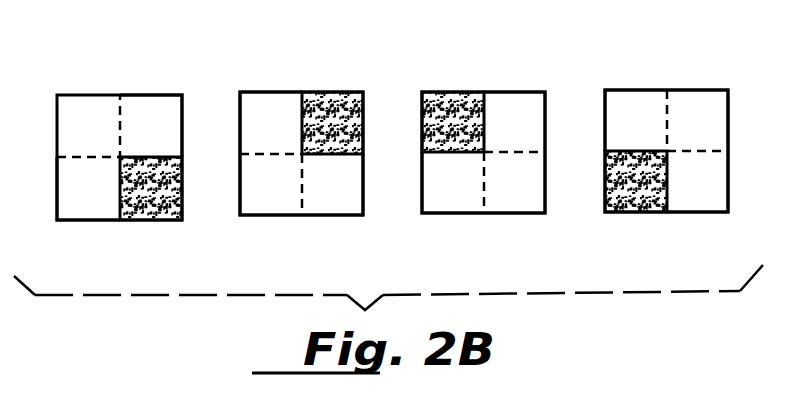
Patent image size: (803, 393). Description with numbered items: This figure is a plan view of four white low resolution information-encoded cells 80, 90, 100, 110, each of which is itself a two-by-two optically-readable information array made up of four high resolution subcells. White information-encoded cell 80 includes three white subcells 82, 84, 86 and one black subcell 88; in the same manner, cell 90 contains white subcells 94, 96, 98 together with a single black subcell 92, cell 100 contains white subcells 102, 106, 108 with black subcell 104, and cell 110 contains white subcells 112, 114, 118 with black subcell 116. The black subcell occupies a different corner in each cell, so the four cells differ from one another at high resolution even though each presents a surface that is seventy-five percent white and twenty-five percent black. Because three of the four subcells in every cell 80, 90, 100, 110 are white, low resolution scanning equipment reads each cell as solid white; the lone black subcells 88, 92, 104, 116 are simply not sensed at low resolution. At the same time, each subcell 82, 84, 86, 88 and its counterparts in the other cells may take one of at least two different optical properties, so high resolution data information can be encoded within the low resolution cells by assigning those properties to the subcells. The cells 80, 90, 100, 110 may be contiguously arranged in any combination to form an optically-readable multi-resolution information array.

The white information-encoded cell 80 is at (72, 82).
The white subcell 82 is at (148, 116).
The white subcell 84 is at (91, 120).
The white subcell 86 is at (102, 223).
The black subcell 88 is at (155, 223).
The white information-encoded cell 90 is at (252, 82).
The black subcell 92 is at (336, 93).
The white subcell 94 is at (275, 112).
The white subcell 96 is at (280, 195).
The white subcell 98 is at (337, 193).
The white information-encoded cell 100 is at (432, 77).
The white subcell 102 is at (515, 108).
The black subcell 104 is at (458, 107).
The white subcell 106 is at (462, 193).
The white subcell 108 is at (530, 187).
The white information-encoded cell 110 is at (616, 73).
The white subcell 112 is at (695, 108).
The white subcell 114 is at (642, 110).
The black subcell 116 is at (642, 213).
The white subcell 118 is at (707, 187).